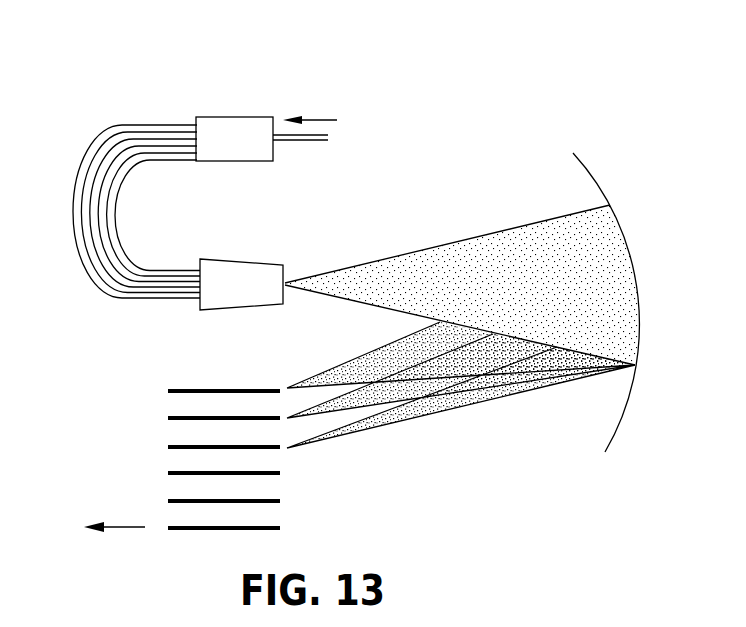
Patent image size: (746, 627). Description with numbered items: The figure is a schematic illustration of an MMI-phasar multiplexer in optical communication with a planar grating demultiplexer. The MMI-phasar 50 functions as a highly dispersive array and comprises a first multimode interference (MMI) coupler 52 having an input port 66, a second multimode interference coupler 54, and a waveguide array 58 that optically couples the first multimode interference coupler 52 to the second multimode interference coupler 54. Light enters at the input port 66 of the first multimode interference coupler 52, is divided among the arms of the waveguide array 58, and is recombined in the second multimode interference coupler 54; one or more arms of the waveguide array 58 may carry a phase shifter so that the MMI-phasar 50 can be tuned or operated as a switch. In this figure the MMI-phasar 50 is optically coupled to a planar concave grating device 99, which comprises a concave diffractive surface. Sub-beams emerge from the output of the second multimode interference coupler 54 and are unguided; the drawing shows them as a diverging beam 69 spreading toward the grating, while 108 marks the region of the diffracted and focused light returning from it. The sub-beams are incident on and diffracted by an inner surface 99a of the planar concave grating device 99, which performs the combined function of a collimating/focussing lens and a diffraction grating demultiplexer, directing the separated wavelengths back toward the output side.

The MMI-phasar 50 is at (117, 112).
The first multimode interference (MMI) coupler 52 is at (213, 132).
The second multimode interference coupler 54 is at (250, 260).
The waveguide array 58 is at (80, 255).
The input port 66 is at (302, 142).
The diverging light beam 69 is at (300, 273).
The reflected focused beams 108 is at (520, 160).
The planar concave grating device 99 is at (625, 190).
The inner surface 99a is at (615, 395).